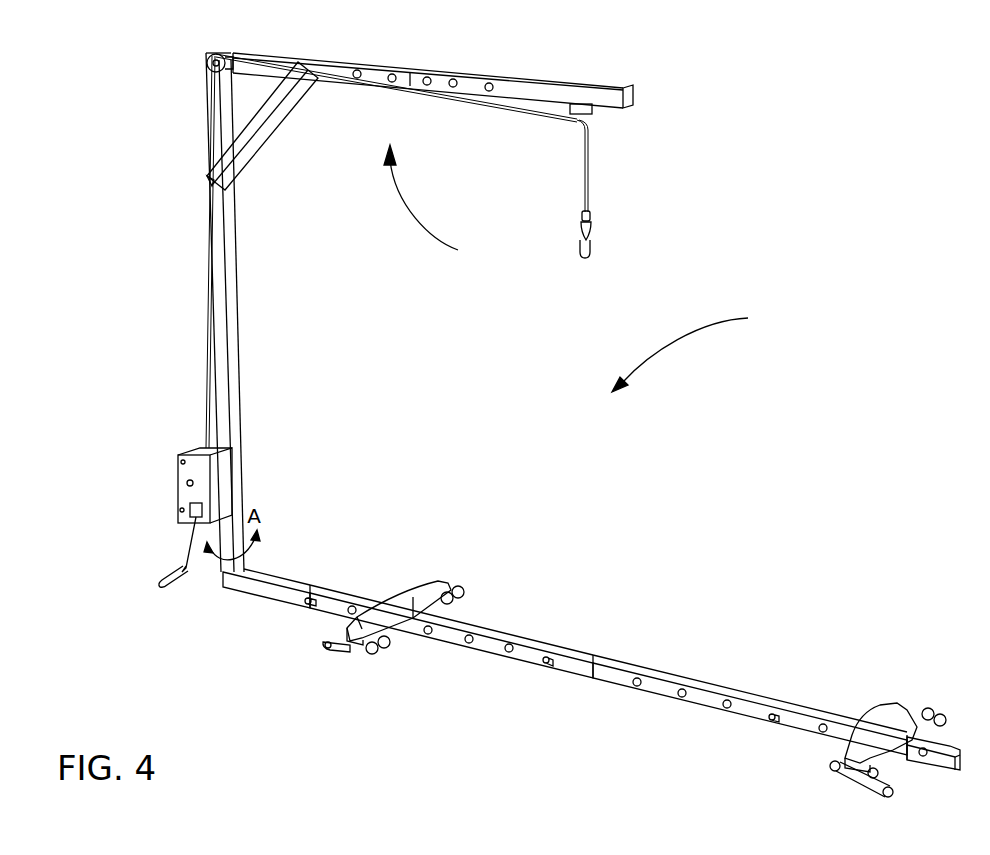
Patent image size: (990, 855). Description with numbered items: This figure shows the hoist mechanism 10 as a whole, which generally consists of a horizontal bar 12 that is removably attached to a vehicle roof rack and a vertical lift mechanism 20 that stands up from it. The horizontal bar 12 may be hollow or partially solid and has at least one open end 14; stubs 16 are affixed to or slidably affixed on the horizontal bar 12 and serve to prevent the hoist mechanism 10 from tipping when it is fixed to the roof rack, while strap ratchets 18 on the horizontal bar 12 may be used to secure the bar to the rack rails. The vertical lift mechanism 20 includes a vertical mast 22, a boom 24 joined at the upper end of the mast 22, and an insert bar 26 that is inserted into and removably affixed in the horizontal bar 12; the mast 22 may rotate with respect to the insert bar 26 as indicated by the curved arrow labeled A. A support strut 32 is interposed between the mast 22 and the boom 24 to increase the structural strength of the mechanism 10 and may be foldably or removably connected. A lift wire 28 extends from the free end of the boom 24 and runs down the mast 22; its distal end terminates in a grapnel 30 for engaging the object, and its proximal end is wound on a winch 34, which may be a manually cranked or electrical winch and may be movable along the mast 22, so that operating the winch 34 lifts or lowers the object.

The hoist mechanism 10 is at (694, 346).
The horizontal bar 12 is at (688, 680).
The open end 14 is at (335, 593).
The stubs 16 is at (408, 600).
The strap ratchets 18 is at (372, 655).
The vertical lift mechanism 20 is at (434, 206).
The vertical mast 22 is at (230, 302).
The boom 24 is at (562, 86).
The insert bar 26 is at (278, 577).
The lift wire 28 is at (588, 163).
The grapnel 30 is at (592, 247).
The support strut 32 is at (280, 125).
The winch 34 is at (182, 483).